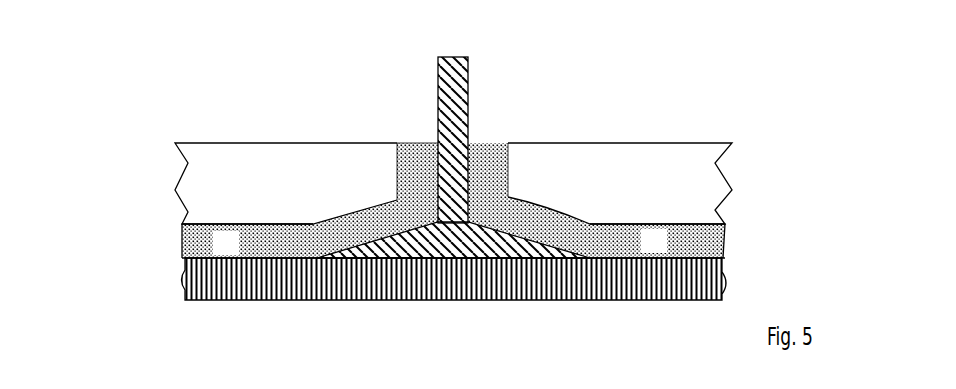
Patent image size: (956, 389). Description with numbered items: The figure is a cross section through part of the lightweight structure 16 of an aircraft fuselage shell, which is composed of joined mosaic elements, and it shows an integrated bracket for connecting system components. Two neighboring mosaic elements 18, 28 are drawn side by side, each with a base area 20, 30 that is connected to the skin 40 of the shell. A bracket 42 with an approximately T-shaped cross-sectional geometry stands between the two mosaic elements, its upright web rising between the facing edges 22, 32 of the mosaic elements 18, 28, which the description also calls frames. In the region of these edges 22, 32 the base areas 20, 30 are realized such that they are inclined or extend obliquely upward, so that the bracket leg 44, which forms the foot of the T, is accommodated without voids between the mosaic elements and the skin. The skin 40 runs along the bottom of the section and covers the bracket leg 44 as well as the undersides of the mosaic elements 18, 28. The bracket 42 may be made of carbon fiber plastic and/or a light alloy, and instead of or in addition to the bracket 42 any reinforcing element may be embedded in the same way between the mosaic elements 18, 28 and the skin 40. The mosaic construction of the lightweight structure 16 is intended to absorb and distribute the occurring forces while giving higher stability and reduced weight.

The lightweight structure 16 is at (652, 91).
The mosaic element 18 is at (640, 177).
The base area 20 is at (723, 225).
The edge 22 is at (513, 162).
The mosaic element 28 is at (243, 167).
The base area 30 is at (237, 252).
The edge 32 is at (388, 145).
The skin 40 is at (447, 285).
The bracket 42 is at (468, 58).
The bracket leg 44 is at (372, 282).